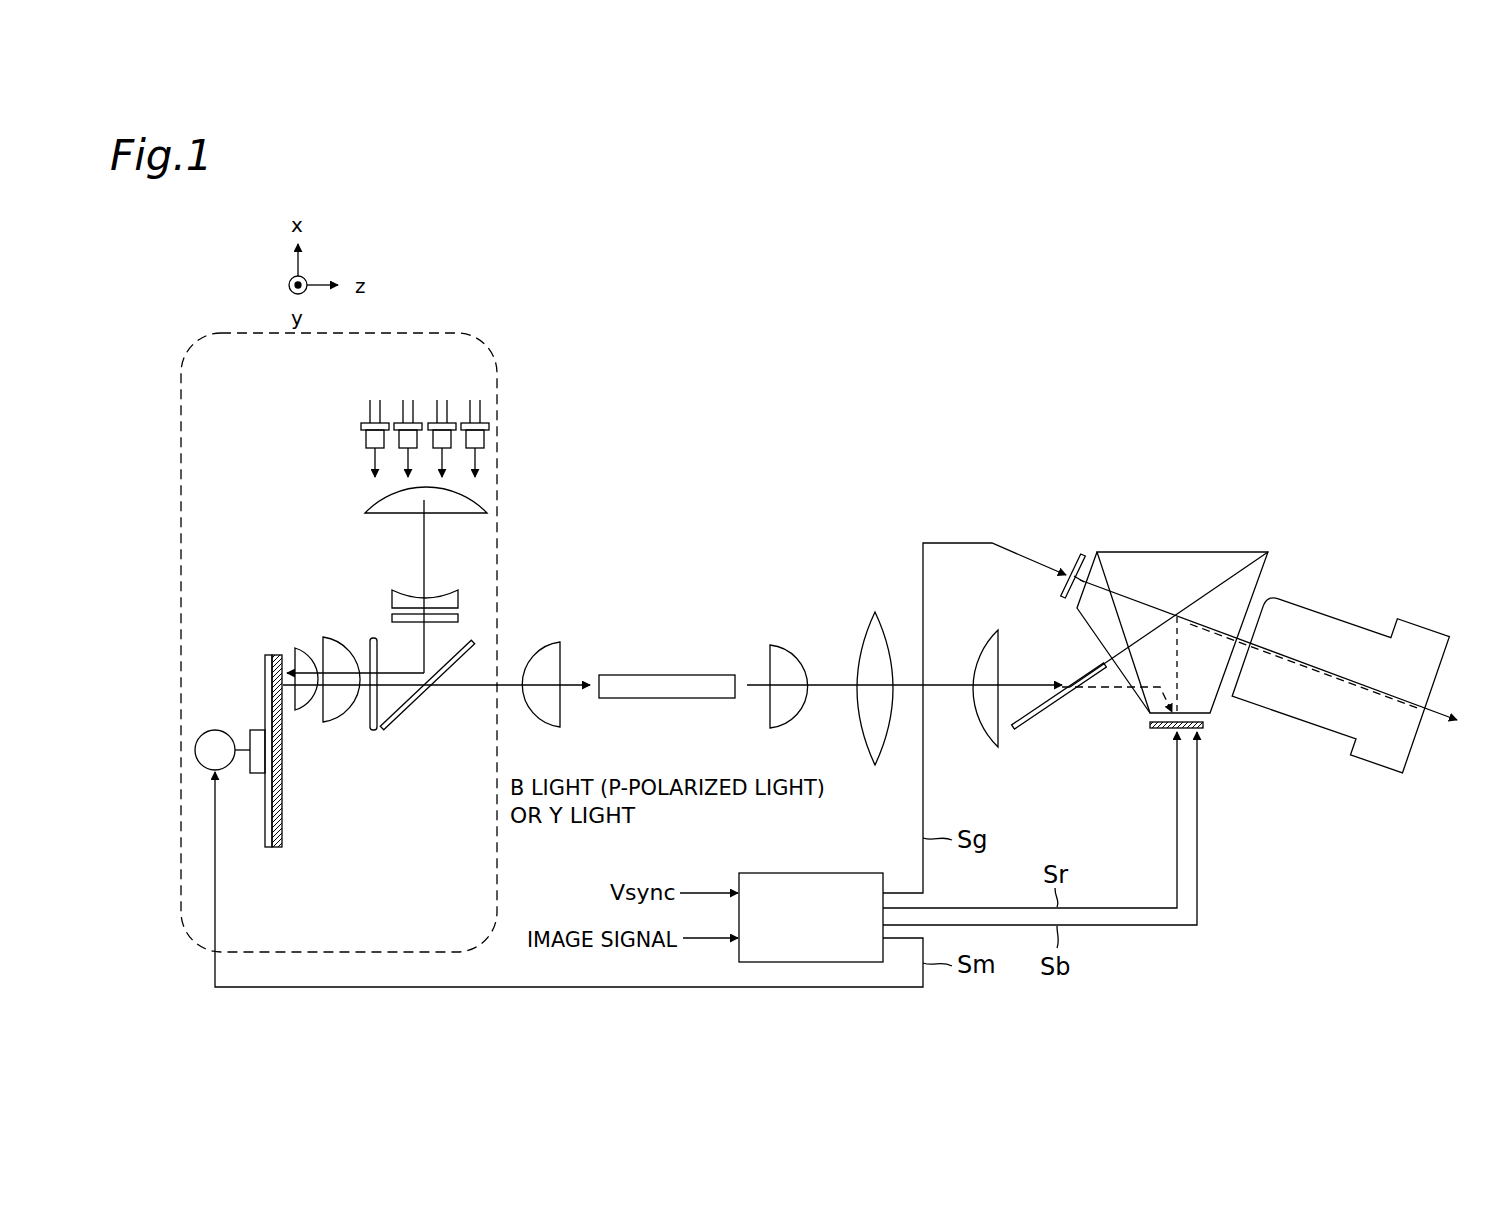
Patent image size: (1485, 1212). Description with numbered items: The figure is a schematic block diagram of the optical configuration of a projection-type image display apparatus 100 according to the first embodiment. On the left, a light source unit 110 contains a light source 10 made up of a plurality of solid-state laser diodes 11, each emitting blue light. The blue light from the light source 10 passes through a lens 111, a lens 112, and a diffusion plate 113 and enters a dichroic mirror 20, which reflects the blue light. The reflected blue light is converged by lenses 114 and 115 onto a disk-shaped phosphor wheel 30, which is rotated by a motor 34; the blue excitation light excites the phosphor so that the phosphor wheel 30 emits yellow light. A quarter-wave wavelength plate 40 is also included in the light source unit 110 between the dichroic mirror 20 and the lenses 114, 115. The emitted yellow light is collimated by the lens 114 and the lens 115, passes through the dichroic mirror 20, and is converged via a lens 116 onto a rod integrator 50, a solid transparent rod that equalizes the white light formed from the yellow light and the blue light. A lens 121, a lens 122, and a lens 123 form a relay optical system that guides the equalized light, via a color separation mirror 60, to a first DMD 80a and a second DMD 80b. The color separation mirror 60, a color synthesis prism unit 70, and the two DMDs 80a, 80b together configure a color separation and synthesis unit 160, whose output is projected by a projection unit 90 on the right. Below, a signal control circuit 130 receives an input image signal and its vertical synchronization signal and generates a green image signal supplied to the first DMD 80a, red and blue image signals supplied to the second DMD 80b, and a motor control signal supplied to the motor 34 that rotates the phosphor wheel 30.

The projection-type image display apparatus 100 is at (400, 204).
The light source unit 110 is at (465, 334).
The light source 10 is at (392, 411).
The laser diode 11 is at (361, 428).
The lens 111 is at (365, 505).
The lens 112 is at (392, 598).
The diffusion plate 113 is at (392, 618).
The dichroic mirror 20 is at (422, 698).
The λ/4 wavelength plate 40 is at (378, 730).
The lens 114 is at (340, 723).
The lens 115 is at (300, 712).
The phosphor wheel 30 is at (272, 850).
The motor 34 is at (215, 729).
The lens 116 is at (553, 643).
The rod integrator 50 is at (675, 675).
The lens 121 is at (778, 646).
The lens 122 is at (868, 613).
The lens 123 is at (990, 630).
The color separation and synthesis unit 160 is at (1240, 485).
The first DMD 80a is at (1068, 560).
The second DMD 80b is at (1172, 732).
The color synthesis prism unit 70 is at (1180, 550).
The color separation mirror 60 is at (1028, 728).
The projection unit 90 is at (1305, 625).
The signal control circuit 130 is at (812, 872).